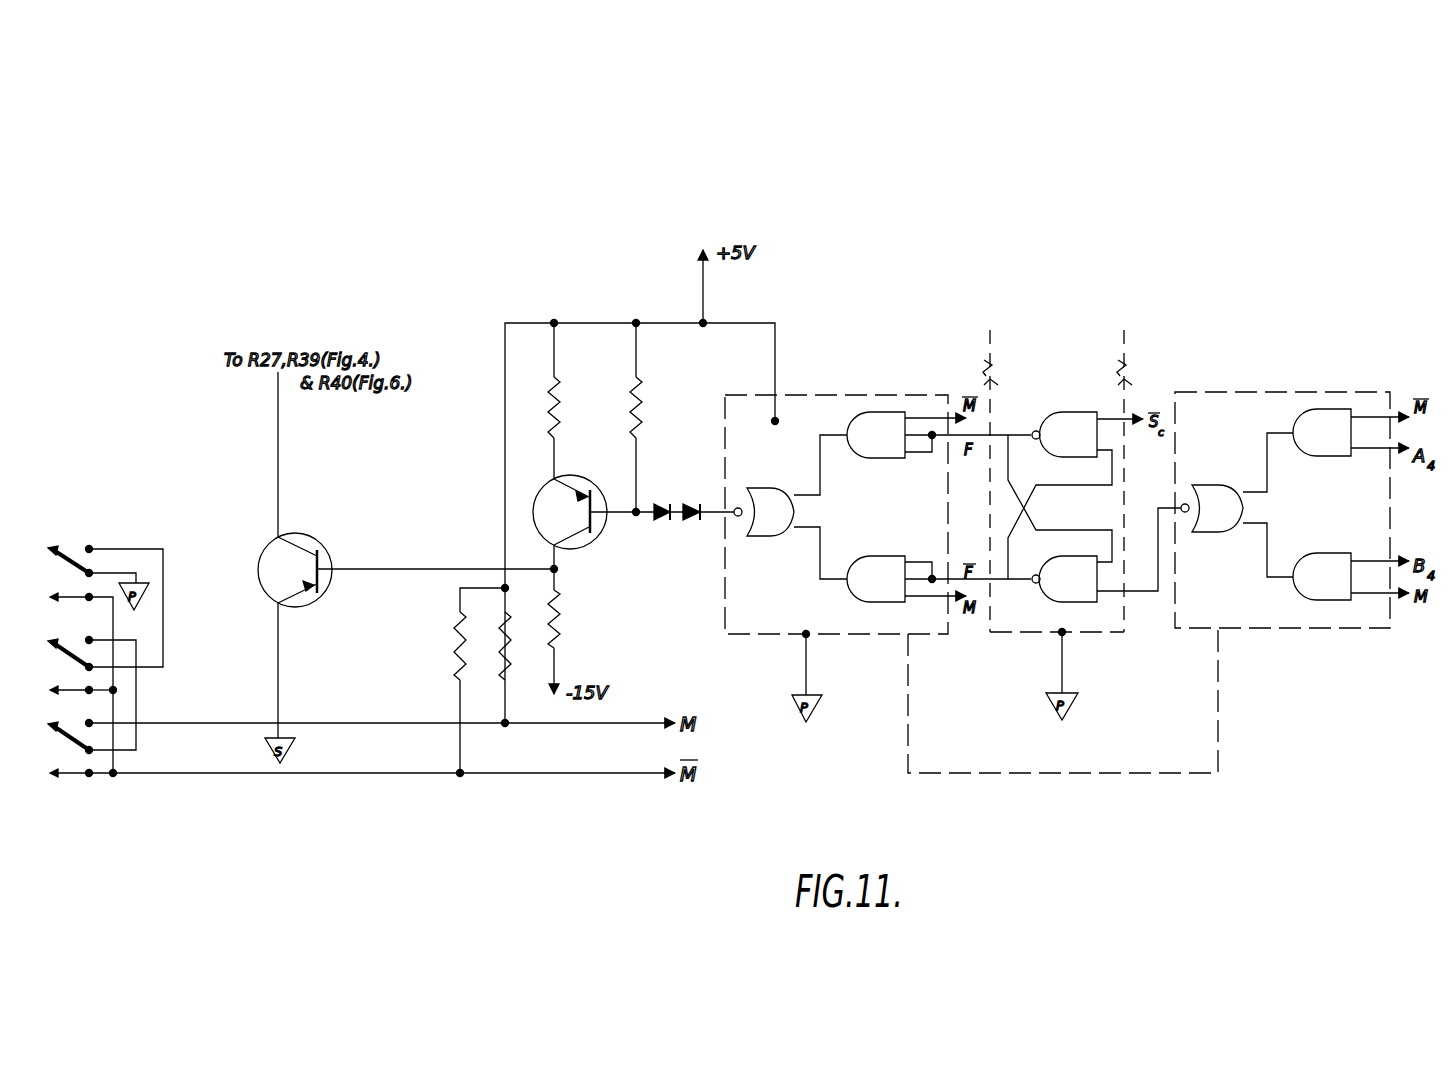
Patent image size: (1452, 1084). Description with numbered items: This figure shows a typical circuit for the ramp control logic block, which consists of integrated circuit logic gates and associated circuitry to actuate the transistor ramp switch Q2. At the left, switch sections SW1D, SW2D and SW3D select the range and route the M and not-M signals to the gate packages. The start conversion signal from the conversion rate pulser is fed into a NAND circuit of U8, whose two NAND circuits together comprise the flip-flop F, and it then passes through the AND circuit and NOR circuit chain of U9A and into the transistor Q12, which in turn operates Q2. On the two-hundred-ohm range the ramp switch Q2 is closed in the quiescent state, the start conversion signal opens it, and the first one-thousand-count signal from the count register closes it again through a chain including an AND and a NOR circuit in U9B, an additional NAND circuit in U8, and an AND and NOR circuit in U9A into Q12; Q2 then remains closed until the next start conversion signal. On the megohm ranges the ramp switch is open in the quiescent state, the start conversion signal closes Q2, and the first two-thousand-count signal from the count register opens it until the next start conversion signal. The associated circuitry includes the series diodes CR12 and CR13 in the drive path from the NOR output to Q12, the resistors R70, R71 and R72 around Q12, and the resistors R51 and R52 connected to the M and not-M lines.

The switch section SW1D is at (68, 567).
The switch section SW2D is at (68, 659).
The switch section SW3D is at (68, 742).
The transistor ramp switch Q2 is at (295, 555).
The transistor Q12 is at (583, 522).
The resistor R70 is at (573, 401).
The resistor R71 is at (656, 417).
The resistor R72 is at (576, 631).
The resistor R51 is at (462, 682).
The resistor R52 is at (523, 646).
The diode CR12 is at (665, 502).
The diode CR13 is at (693, 522).
The AND and NOR circuit chain U9A is at (878, 514).
The NAND circuit U8 is at (1082, 481).
The AND and NOR circuit U9B is at (1292, 510).